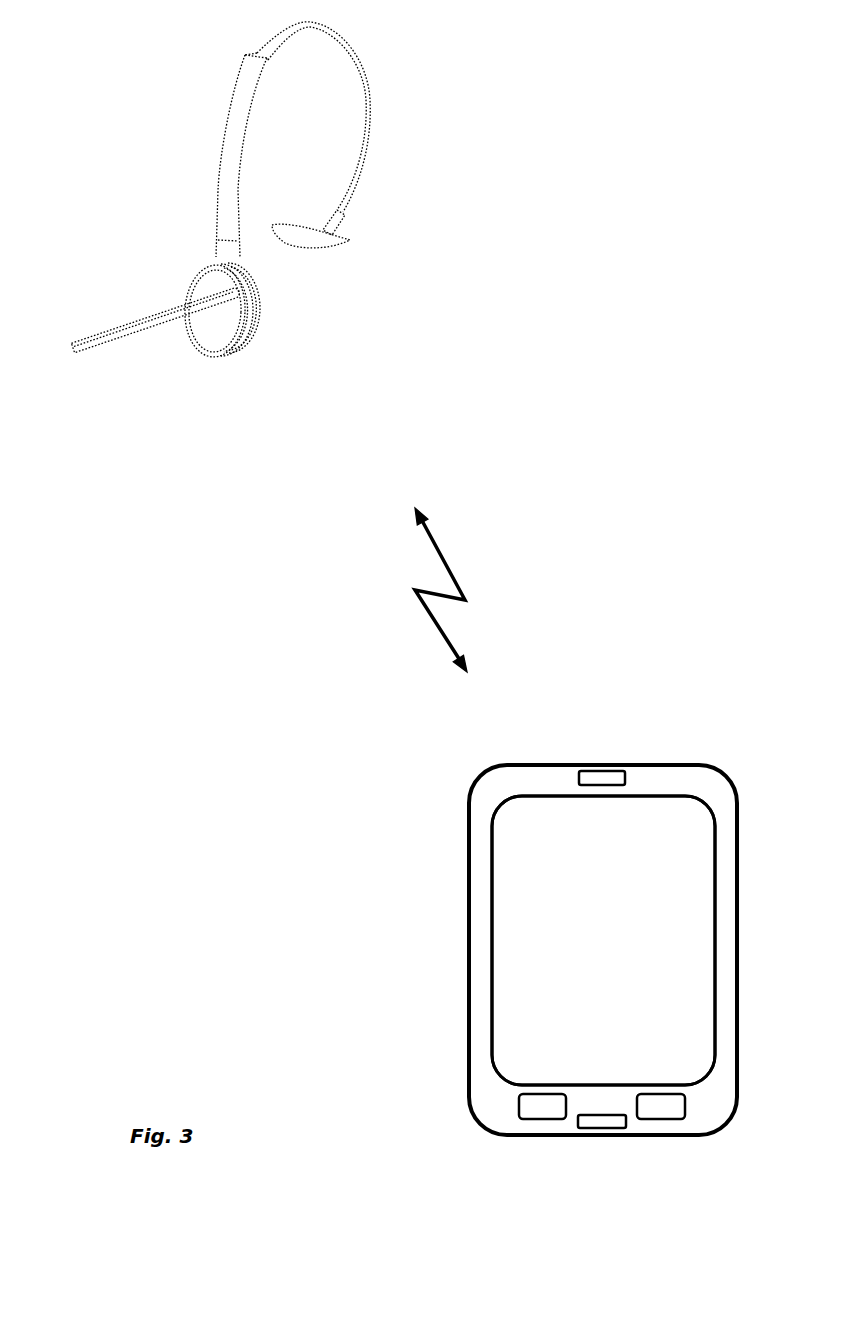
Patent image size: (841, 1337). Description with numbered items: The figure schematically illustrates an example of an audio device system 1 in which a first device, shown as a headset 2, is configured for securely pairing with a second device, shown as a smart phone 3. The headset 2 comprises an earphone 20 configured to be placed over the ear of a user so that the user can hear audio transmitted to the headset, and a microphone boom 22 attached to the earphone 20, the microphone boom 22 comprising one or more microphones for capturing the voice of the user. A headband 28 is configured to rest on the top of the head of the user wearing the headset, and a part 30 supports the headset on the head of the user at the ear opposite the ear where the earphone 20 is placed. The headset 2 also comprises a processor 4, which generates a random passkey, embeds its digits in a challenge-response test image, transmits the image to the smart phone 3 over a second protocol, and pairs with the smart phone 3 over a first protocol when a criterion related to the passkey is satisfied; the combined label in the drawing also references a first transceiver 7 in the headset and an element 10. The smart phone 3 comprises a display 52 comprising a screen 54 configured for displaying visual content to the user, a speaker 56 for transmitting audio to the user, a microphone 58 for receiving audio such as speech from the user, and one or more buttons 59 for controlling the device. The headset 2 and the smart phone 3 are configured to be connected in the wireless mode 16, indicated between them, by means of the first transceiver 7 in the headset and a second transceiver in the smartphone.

The audio device system 1 is at (652, 151).
The headset 2 is at (385, 88).
The smart phone 3 is at (443, 1012).
The processor 4 is at (233, 357).
The first transceiver 7 is at (190, 290).
The earphone 20 is at (197, 289).
The processing unit 10 is at (219, 288).
The wireless mode 16 is at (467, 590).
The microphone boom 22 is at (153, 333).
The headband 28 is at (233, 123).
The part supporting the headset 30 is at (330, 238).
The display 52 is at (503, 873).
The screen 54 is at (526, 940).
The speaker 56 is at (600, 777).
The microphone 58 is at (603, 1120).
The buttons 59 is at (540, 1112).